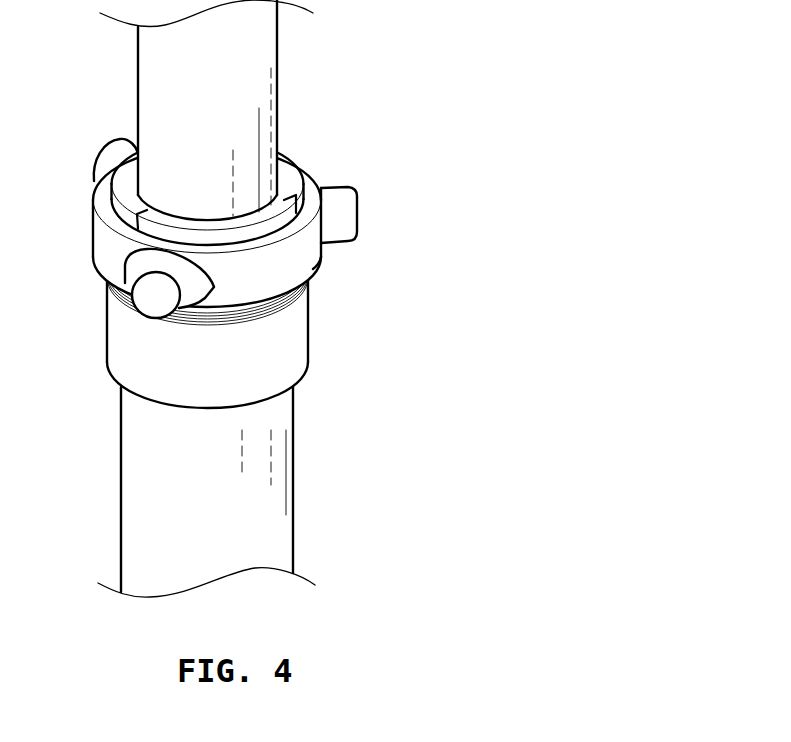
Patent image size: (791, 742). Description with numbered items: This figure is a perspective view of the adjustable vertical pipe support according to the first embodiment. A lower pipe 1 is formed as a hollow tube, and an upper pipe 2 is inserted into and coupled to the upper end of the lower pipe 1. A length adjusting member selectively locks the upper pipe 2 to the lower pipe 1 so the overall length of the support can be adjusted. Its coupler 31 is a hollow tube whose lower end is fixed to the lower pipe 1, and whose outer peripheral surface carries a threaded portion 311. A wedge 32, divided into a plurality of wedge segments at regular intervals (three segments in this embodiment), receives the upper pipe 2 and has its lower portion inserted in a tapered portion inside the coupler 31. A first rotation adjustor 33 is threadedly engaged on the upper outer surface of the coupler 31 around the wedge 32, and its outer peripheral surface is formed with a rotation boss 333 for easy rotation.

The lower pipe 1 is at (293, 458).
The upper pipe 2 is at (277, 85).
The coupler 31 is at (110, 337).
The threaded portion 311 is at (227, 322).
The wedge 32 is at (122, 185).
The first rotation adjustor 33 is at (95, 245).
The rotation boss 333 is at (360, 212).